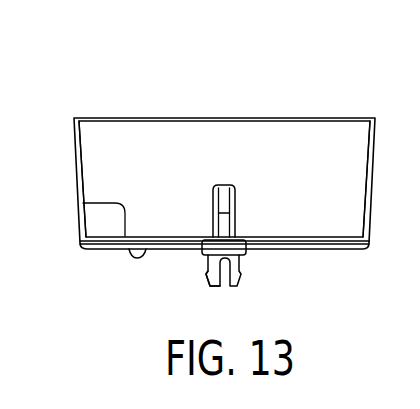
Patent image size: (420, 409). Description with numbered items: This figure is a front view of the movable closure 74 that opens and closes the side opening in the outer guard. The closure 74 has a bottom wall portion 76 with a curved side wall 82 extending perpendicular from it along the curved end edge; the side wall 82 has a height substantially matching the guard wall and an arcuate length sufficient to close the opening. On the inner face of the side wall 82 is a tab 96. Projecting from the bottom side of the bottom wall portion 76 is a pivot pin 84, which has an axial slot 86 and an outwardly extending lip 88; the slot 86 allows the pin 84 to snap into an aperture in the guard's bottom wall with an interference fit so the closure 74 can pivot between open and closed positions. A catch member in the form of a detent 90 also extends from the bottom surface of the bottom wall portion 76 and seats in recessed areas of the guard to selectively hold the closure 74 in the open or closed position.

The closure 74 is at (259, 97).
The side wall 82 is at (287, 142).
The bottom wall portion 76 is at (86, 204).
The tab 96 is at (212, 205).
The pivot pin 84 is at (241, 257).
The outwardly extending lip 88 is at (207, 272).
The axial slot 86 is at (224, 288).
The detent 90 is at (142, 258).